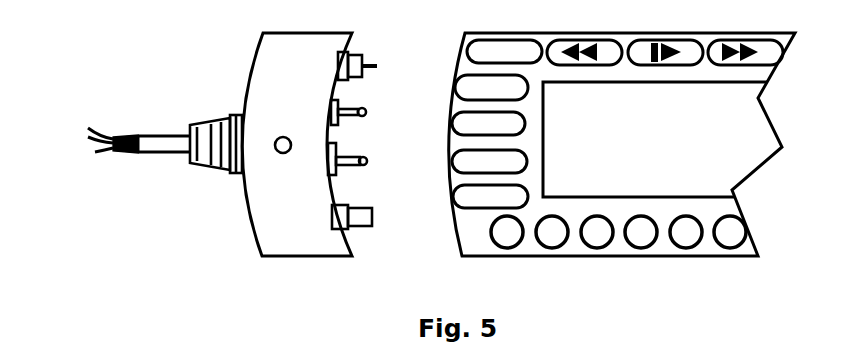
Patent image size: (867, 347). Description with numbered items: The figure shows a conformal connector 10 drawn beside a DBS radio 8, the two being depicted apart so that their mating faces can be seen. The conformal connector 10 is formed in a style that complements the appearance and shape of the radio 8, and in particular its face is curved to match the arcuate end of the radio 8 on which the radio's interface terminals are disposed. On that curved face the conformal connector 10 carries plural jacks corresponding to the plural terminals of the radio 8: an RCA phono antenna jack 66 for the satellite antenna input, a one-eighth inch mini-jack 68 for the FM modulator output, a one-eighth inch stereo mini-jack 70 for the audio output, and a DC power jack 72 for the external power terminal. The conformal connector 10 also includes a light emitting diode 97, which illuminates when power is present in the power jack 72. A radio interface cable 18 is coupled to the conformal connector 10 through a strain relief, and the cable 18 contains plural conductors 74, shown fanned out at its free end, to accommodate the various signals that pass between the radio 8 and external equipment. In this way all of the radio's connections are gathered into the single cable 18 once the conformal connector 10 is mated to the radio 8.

The DBS radio 8 is at (620, 258).
The conformal connector 10 is at (250, 63).
The radio interface cable 18 is at (165, 153).
The RCA phono antenna jack 66 is at (372, 58).
The mini-jack 68 is at (364, 107).
The stereo mini-jack 70 is at (365, 156).
The DC power jack 72 is at (370, 207).
The plural conductors 74 is at (80, 125).
The light emitting diode 97 is at (277, 152).